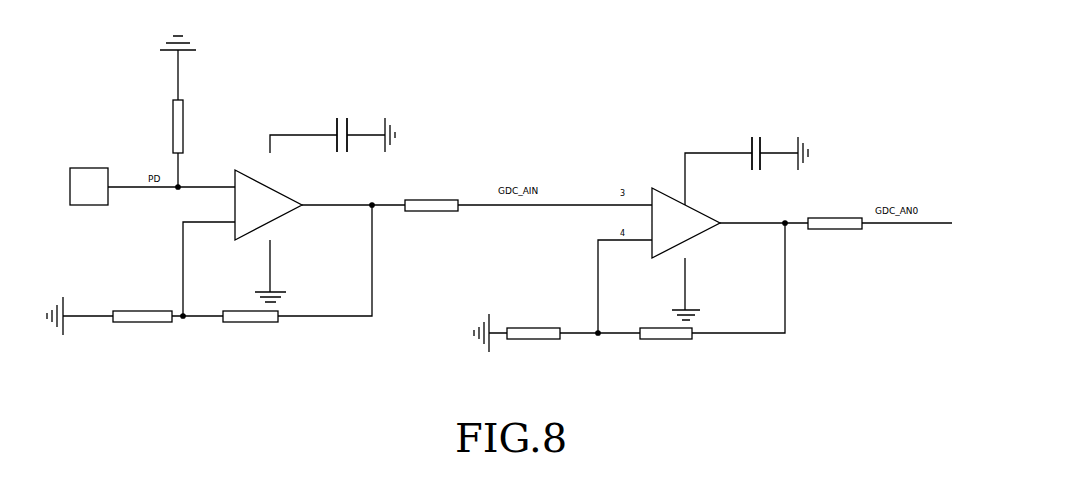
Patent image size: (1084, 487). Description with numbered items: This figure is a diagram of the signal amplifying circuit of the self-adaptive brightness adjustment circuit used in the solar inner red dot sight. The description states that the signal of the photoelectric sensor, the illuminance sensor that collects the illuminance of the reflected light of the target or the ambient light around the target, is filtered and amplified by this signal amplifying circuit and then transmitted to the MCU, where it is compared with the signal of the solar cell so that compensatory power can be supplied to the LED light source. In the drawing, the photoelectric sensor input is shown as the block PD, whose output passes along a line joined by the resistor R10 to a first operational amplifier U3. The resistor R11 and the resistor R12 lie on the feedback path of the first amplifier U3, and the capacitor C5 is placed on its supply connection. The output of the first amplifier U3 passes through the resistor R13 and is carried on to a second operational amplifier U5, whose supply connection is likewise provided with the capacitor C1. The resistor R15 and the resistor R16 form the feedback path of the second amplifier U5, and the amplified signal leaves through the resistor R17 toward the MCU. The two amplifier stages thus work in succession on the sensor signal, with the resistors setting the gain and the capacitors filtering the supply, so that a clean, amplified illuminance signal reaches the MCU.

The photodiode input block PD is at (89, 181).
The resistor R10 is at (183, 111).
The resistor R11 is at (135, 316).
The resistor R12 is at (250, 309).
The resistor R13 is at (528, 198).
The resistor R15 is at (557, 332).
The resistor R16 is at (666, 325).
The resistor R17 is at (880, 216).
The capacitor C1 is at (753, 145).
The capacitor C5 is at (339, 128).
The operational amplifier MCP6001 U3 is at (300, 209).
The operational amplifier MCP6002 U5 is at (730, 228).